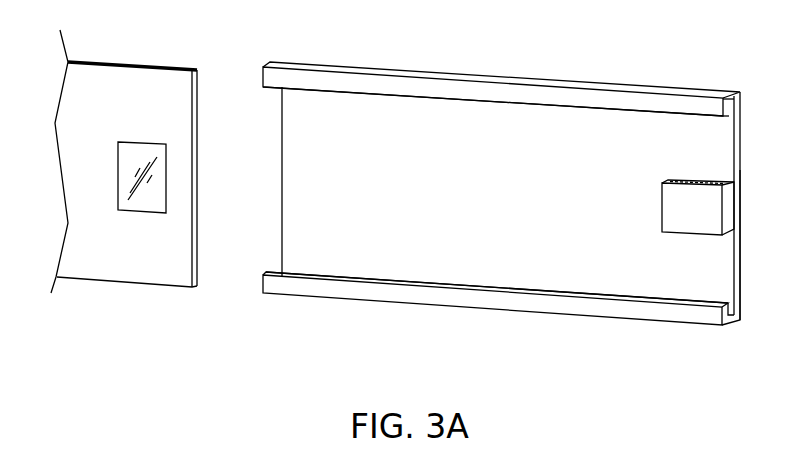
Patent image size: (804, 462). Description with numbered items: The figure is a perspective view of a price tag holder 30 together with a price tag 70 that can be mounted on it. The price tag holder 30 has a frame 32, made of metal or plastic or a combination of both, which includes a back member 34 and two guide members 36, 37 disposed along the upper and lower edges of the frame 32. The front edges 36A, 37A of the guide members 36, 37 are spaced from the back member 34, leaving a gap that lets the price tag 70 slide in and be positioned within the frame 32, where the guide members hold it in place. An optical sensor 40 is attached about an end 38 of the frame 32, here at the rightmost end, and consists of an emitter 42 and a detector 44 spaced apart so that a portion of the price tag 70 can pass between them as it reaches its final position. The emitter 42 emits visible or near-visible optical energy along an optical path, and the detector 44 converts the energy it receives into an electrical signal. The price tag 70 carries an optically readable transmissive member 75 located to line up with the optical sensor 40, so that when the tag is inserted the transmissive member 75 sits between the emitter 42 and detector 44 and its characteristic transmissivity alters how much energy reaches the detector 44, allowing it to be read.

The price tag holder 30 is at (670, 60).
The frame 32 is at (741, 145).
The back member 34 is at (313, 143).
The guide member 36 is at (373, 68).
The front edge 36A is at (405, 96).
The guide member 37 is at (402, 304).
The front edge 37A is at (440, 285).
The end 38 is at (740, 260).
The optical sensor 40 is at (742, 187).
The emitter 42 is at (678, 233).
The detector 44 is at (697, 183).
The price tag 70 is at (164, 67).
The transmissive member 75 is at (150, 142).